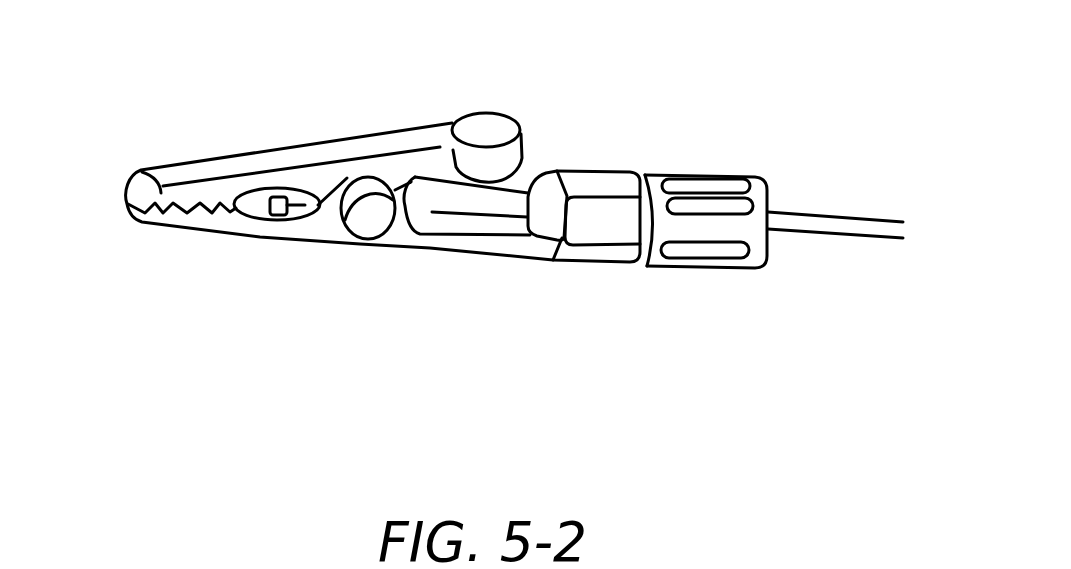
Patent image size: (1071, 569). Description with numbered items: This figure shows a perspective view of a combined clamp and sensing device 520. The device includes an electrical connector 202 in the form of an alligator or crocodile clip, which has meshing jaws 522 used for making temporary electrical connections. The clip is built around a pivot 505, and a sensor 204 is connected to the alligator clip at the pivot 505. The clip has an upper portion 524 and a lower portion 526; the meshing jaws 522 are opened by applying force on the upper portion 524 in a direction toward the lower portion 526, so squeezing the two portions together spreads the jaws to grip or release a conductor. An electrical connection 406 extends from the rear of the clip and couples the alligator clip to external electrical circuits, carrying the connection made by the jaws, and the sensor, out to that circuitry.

The combined clamp and sensing device 520 is at (622, 62).
The meshing jaws 522 is at (143, 203).
The sensor 204 is at (273, 221).
The pivot 505 is at (372, 232).
The upper portion 524 is at (477, 110).
The lower portion 526 is at (507, 243).
The electrical connector 202 is at (450, 263).
The electrical connection 406 is at (858, 237).